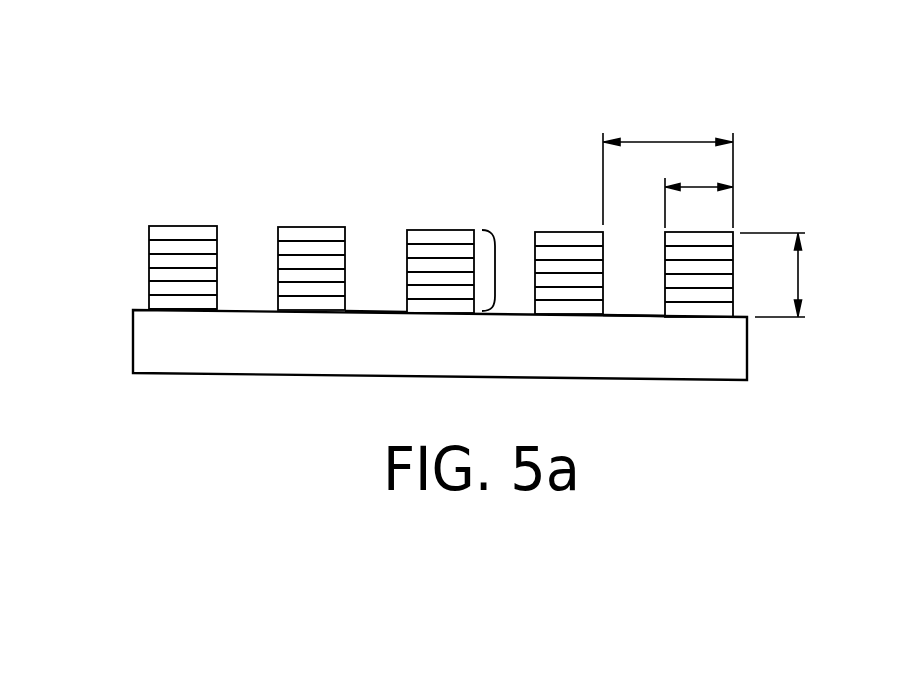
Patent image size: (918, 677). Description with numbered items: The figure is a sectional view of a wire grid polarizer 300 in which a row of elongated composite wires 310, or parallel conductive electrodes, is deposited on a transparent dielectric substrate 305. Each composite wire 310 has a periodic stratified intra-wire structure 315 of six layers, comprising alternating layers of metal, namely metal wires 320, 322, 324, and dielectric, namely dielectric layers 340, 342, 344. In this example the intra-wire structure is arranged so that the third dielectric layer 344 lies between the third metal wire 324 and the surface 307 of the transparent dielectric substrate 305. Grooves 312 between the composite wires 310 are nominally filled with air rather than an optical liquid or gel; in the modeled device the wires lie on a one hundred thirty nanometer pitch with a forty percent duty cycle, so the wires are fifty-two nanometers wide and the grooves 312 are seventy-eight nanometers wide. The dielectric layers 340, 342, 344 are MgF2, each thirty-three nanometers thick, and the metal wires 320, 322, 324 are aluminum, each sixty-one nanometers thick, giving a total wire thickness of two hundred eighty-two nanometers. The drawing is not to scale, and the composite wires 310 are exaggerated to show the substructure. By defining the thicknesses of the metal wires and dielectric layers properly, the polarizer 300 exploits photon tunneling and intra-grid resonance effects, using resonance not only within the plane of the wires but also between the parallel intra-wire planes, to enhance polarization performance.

The wire grid polarizer 300 is at (323, 56).
The transparent dielectric substrate 305 is at (133, 345).
The surface of transparent dielectric substrate 307 is at (395, 282).
The elongated composite wire 310 is at (338, 227).
The groove 312 is at (523, 240).
The intra-wire structure 315 is at (498, 270).
The metal wire 320 is at (202, 226).
The metal wire 322 is at (149, 258).
The metal wire 324 is at (149, 287).
The dielectric layer 340 is at (217, 248).
The dielectric layer 342 is at (217, 277).
The dielectric layer 344 is at (217, 309).